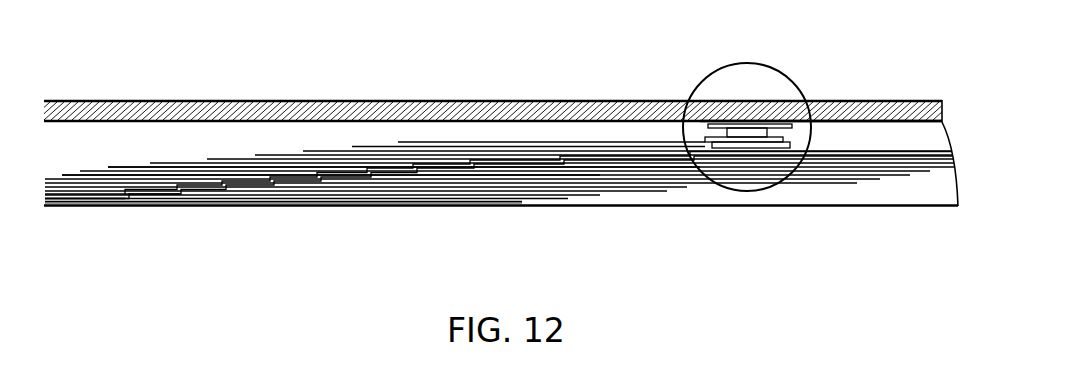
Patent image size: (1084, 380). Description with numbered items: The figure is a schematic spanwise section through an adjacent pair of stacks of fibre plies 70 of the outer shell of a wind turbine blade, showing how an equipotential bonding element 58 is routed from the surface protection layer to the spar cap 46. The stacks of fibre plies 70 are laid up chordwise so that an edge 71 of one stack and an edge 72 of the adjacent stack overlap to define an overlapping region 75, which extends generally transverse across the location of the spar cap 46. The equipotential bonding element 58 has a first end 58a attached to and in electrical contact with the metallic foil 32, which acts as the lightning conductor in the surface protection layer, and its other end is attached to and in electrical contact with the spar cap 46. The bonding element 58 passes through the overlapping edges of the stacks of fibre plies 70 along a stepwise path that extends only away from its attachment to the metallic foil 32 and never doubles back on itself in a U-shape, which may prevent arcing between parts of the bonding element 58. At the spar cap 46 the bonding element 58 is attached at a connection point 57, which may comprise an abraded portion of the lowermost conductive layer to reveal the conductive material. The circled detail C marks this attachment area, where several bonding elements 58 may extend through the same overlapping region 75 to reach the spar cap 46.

The metallic foil 32 is at (542, 206).
The spar cap 46 is at (267, 102).
The connection point 57 is at (866, 112).
The equipotential bonding element 58 is at (317, 178).
The first end 58a is at (72, 198).
The stacks of fibre plies 70 is at (165, 180).
The inboard edge 71 is at (242, 171).
The outboard edge 72 is at (260, 205).
The overlapping region 75 is at (180, 215).
The detail C is at (748, 62).